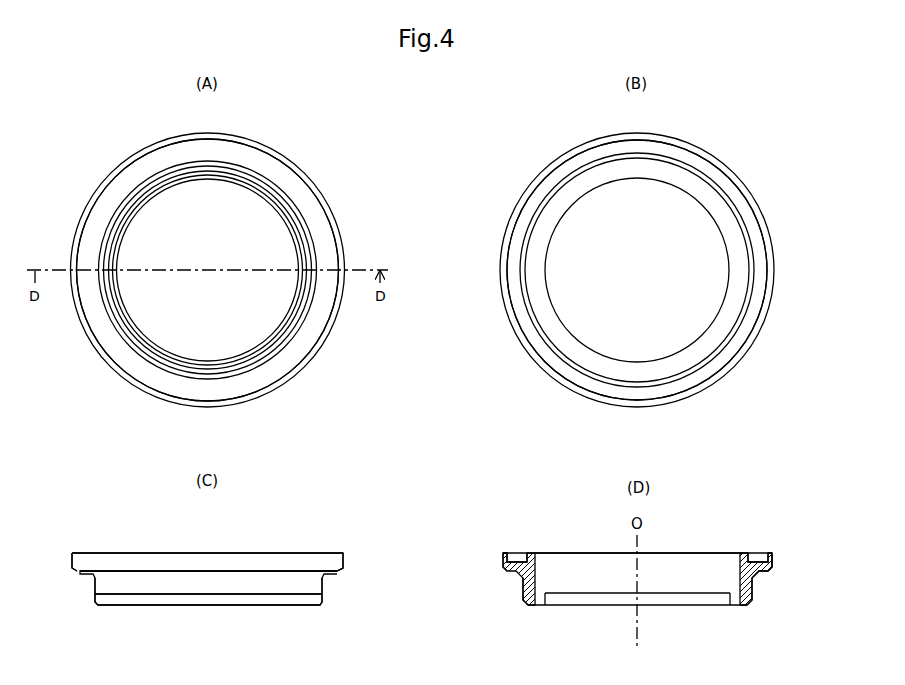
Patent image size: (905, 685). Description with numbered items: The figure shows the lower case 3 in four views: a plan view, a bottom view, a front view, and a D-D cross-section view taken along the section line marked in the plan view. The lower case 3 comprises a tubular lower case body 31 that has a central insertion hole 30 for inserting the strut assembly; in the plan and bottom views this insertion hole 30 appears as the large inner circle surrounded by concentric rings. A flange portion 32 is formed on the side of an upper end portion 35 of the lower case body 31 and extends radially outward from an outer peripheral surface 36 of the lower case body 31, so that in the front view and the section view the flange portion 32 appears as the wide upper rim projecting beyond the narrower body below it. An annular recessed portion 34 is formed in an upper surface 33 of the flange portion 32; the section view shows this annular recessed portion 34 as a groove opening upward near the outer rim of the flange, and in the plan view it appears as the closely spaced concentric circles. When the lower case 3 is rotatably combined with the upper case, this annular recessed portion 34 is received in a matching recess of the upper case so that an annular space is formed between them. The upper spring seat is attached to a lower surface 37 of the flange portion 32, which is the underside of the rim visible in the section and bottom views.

The lower case 3 is at (382, 101).
The insertion hole 30 is at (157, 220).
The lower case body 31 is at (313, 178).
The flange portion 32 is at (340, 215).
The upper surface 33 is at (122, 553).
The annular recessed portion 34 is at (258, 165).
The upper end portion 35 is at (785, 550).
The outer peripheral surface 36 is at (753, 258).
The lower surface 37 is at (516, 573).